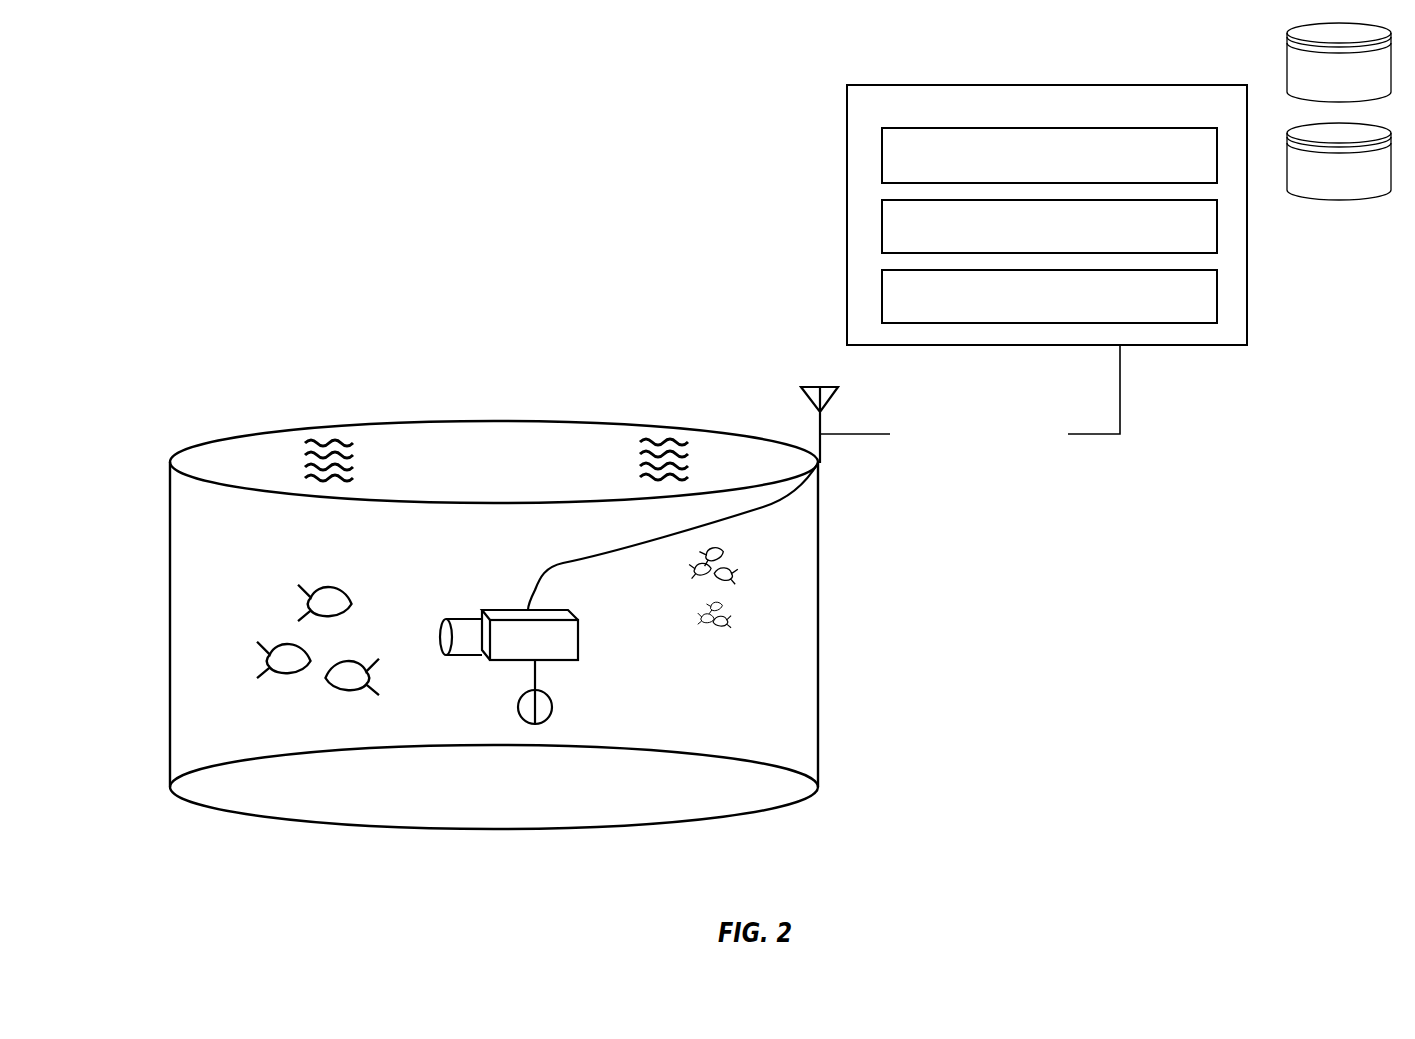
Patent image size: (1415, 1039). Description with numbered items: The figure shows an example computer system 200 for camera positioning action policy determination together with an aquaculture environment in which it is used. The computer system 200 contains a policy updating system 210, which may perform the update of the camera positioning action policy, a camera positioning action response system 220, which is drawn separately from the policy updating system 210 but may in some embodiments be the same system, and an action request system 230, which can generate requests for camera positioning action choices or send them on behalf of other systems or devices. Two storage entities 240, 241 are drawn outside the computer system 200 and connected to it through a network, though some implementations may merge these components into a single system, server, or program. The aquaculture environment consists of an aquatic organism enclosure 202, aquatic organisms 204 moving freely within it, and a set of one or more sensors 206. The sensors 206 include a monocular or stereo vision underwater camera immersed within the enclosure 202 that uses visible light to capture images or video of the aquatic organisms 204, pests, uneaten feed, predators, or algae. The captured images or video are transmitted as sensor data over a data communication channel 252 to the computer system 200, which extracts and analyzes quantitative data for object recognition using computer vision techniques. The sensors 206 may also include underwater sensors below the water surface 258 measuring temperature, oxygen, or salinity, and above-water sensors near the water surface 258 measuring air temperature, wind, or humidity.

The computer system 200 is at (1047, 114).
The policy updating system 210 is at (1172, 165).
The camera positioning action response system 220 is at (1175, 235).
The action request system 230 is at (1180, 306).
The storage 240 is at (1247, 117).
The storage 241 is at (1247, 157).
The data communication channel 252 is at (960, 406).
The aquatic organism enclosure 202 is at (820, 668).
The water surface 258 is at (327, 440).
The aquatic organisms 204 is at (329, 722).
The sensors 206 is at (578, 640).